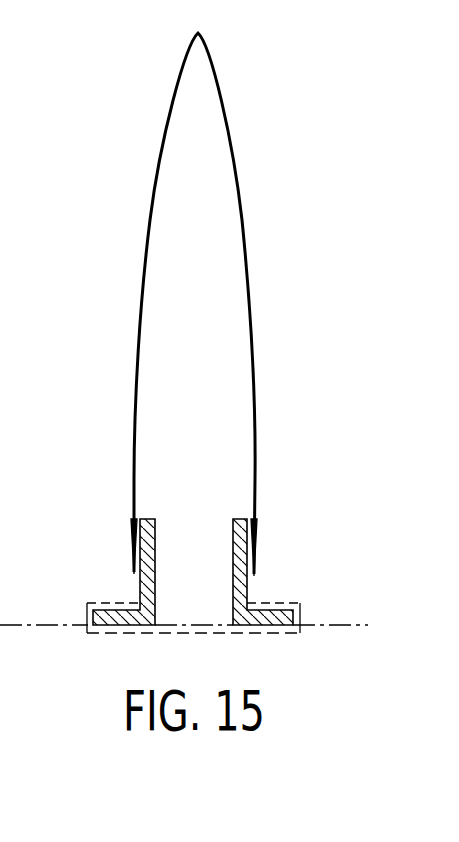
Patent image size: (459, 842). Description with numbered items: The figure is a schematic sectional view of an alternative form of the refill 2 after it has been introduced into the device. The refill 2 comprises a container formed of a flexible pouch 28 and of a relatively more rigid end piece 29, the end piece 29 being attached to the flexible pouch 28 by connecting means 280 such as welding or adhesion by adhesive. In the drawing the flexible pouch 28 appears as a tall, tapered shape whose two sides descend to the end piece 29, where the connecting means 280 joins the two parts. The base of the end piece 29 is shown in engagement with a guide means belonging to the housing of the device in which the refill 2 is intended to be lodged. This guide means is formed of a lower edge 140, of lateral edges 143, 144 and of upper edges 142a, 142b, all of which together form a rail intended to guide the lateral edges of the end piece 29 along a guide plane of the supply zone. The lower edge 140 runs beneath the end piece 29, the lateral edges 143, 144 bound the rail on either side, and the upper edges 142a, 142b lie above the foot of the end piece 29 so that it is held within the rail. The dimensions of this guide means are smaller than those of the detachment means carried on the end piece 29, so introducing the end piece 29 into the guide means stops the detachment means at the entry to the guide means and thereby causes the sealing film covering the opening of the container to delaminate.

The refill 2 is at (147, 107).
The flexible pouch 28 is at (237, 162).
The connecting means 280 is at (254, 550).
The end piece 29 is at (249, 590).
The upper edge 142a is at (282, 600).
The upper edge 142b is at (116, 600).
The lateral edge 143 is at (303, 629).
The lateral edge 144 is at (87, 630).
The lower edge 140 is at (246, 633).